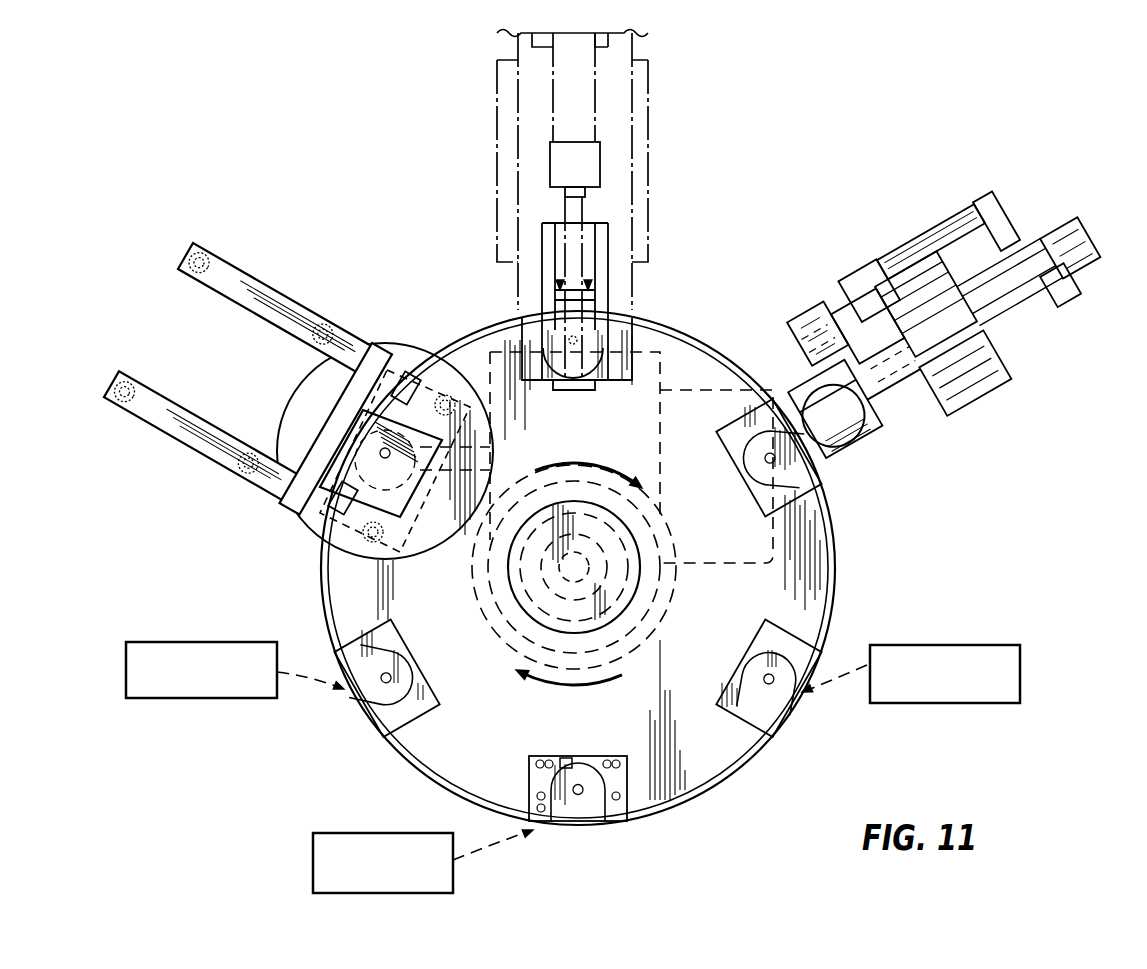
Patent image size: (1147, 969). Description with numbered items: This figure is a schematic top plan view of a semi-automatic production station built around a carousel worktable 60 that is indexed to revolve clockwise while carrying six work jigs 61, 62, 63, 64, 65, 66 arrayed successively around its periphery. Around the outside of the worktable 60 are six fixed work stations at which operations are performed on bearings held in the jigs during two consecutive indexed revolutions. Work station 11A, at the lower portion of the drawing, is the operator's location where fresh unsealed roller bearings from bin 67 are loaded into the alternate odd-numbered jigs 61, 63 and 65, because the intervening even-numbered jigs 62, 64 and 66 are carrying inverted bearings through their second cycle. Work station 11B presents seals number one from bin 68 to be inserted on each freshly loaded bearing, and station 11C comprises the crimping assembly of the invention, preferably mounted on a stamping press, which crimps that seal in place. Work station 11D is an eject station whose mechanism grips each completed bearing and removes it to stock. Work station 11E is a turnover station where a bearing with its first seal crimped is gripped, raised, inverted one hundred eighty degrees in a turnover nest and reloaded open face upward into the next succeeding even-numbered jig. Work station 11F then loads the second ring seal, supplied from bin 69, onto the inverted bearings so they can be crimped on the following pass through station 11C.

The carousel worktable 60 is at (833, 568).
The work jig 61 is at (593, 753).
The work jig 62 is at (763, 626).
The work jig 63 is at (716, 432).
The work jig 64 is at (607, 388).
The work jig 65 is at (396, 490).
The work jig 66 is at (432, 686).
The bin 67 is at (330, 833).
The bin 68 is at (183, 699).
The bin 69 is at (930, 645).
The work station 11A is at (589, 873).
The work station 11B is at (330, 744).
The crimping assembly station 11C is at (212, 461).
The eject station 11D is at (514, 284).
The turnover station 11E is at (884, 444).
The loading station 11F is at (836, 752).